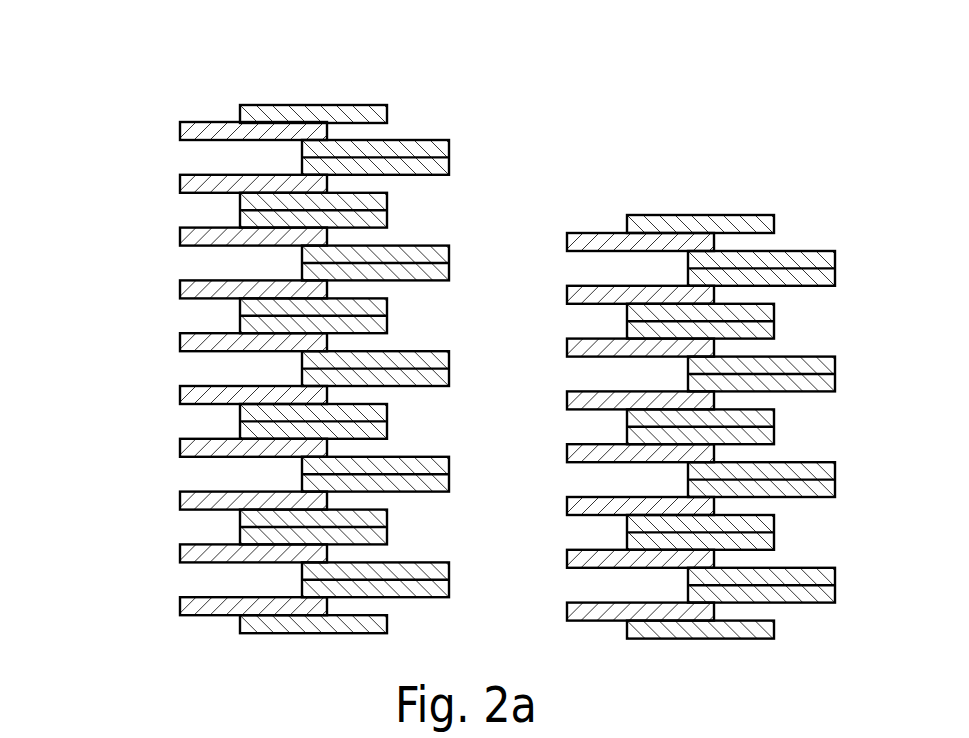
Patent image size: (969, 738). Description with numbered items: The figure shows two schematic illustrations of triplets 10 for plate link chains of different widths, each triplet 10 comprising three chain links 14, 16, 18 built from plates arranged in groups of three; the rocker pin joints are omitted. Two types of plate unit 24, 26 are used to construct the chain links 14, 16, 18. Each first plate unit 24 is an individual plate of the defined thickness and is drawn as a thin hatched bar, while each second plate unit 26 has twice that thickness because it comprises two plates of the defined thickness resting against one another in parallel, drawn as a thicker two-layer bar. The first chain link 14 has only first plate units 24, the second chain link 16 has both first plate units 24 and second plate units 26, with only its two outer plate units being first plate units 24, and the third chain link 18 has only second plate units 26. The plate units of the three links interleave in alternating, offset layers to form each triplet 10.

The triplet 10 is at (136, 100).
The first chain link 14 is at (210, 92).
The second chain link 16 is at (307, 84).
The third chain link 18 is at (411, 126).
The first plate unit 24 is at (464, 368).
The second plate unit 26 is at (578, 330).